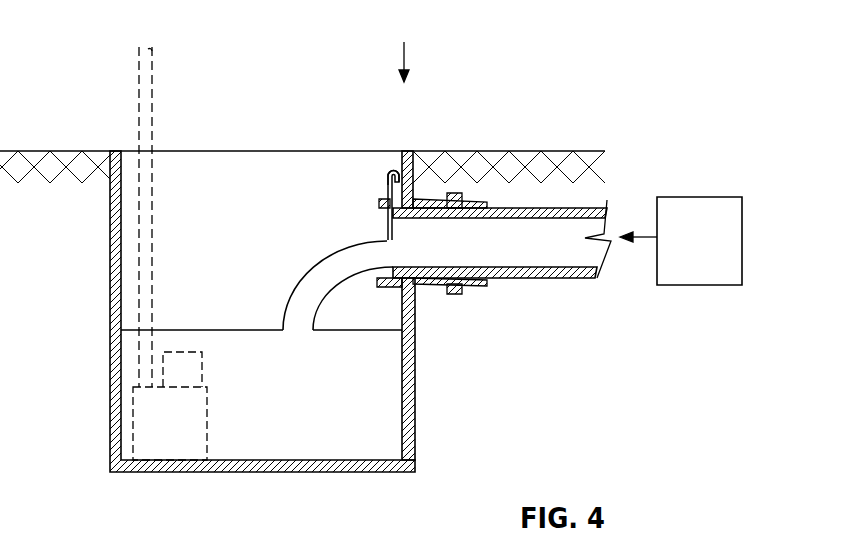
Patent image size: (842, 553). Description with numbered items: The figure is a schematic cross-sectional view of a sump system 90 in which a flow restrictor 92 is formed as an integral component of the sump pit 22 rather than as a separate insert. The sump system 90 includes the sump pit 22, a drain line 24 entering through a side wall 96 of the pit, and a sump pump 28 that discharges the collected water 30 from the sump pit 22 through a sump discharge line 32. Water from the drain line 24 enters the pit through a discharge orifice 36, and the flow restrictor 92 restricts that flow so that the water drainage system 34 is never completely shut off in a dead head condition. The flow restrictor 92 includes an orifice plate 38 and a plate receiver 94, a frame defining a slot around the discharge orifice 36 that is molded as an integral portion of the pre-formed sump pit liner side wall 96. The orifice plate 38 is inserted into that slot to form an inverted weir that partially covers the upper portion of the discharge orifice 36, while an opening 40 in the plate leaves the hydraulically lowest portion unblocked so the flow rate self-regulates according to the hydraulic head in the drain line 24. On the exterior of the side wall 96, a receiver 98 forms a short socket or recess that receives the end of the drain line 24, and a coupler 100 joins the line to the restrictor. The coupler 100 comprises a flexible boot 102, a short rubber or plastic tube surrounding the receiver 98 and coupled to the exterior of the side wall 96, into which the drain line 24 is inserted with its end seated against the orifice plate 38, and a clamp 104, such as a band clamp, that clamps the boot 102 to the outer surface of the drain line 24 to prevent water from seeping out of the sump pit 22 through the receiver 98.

The sump pit 22 is at (296, 474).
The drain line 24 is at (597, 278).
The sump pump 28 is at (133, 425).
The water 30 is at (293, 430).
The sump discharge line 32 is at (140, 70).
The water drainage system 34 is at (702, 286).
The discharge orifice 36 is at (398, 247).
The orifice plate 38 is at (388, 218).
The opening 40 is at (387, 249).
The sump system 90 is at (404, 51).
The flow restrictor 92 is at (375, 193).
The plate receiver 94 is at (385, 198).
The side wall 96 is at (407, 398).
The receiver 98 is at (407, 181).
The coupler 100 is at (457, 280).
The flexible boot 102 is at (483, 199).
The clamp 104 is at (455, 193).